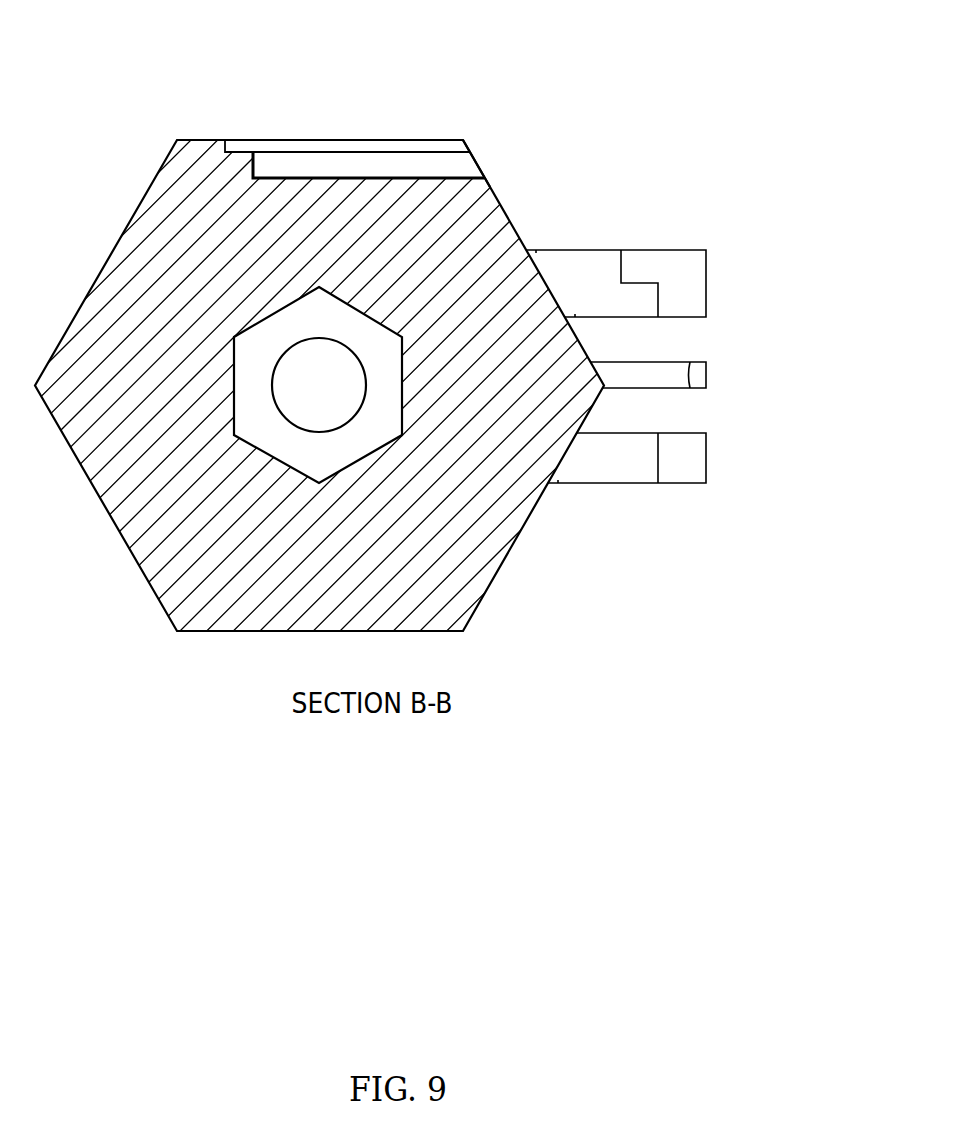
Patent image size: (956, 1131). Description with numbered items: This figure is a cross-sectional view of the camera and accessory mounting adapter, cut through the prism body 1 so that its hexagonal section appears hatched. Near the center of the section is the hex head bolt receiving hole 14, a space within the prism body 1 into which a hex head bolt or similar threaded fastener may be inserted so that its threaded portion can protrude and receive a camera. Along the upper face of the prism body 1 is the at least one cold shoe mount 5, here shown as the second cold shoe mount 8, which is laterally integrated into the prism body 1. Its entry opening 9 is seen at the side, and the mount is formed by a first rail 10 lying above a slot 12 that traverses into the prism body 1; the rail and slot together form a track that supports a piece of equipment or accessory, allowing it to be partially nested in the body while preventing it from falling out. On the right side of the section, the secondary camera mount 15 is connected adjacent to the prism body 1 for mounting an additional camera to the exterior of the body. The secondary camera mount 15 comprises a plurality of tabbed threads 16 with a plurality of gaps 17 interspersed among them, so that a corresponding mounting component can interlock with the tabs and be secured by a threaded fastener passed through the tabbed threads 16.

The prism body 1 is at (185, 642).
The cold shoe mount 5 is at (302, 60).
The second cold shoe mount 8 is at (249, 136).
The entry opening 9 is at (479, 162).
The first rail 10 is at (438, 143).
The slot 12 is at (333, 174).
The hex head bolt receiving hole 14 is at (252, 389).
The secondary camera mount 15 is at (679, 368).
The tabbed threads 16 is at (706, 251).
The gaps 17 is at (703, 342).